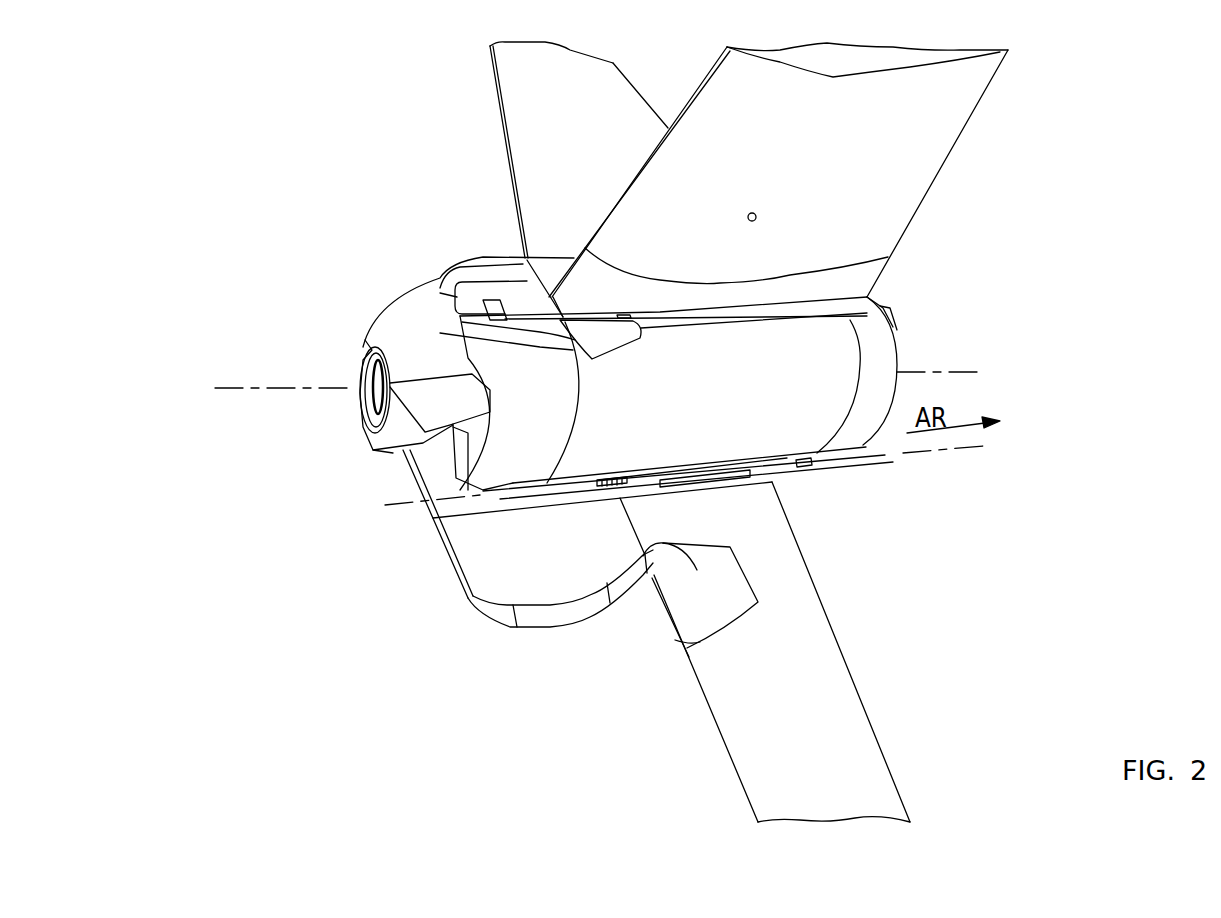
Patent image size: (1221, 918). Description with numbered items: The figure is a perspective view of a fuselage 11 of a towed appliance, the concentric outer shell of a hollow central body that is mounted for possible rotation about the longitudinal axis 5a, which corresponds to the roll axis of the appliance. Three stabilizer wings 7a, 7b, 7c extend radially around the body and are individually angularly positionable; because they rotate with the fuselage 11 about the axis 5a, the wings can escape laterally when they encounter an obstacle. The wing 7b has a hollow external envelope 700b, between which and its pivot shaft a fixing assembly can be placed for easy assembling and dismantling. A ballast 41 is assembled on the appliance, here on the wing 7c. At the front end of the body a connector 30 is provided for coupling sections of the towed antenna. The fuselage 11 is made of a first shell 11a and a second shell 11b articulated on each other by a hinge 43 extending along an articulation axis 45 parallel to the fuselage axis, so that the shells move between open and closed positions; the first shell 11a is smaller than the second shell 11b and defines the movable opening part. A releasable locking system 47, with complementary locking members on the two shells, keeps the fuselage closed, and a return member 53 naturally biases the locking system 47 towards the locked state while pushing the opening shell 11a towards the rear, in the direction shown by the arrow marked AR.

The longitudinal axis 5a is at (237, 388).
The wing 7a is at (513, 123).
The wing 7b is at (893, 206).
The wing 7c is at (840, 683).
The hollow external envelope 700b is at (940, 123).
The fuselage 11 is at (382, 313).
The first shell 11a is at (805, 430).
The second shell 11b is at (418, 288).
The connector 30 is at (380, 387).
The ballast 41 is at (510, 587).
The hinge 43 is at (728, 460).
The articulation axis 45 is at (950, 450).
The releasable locking system 47 is at (493, 300).
The return member 53 is at (607, 477).